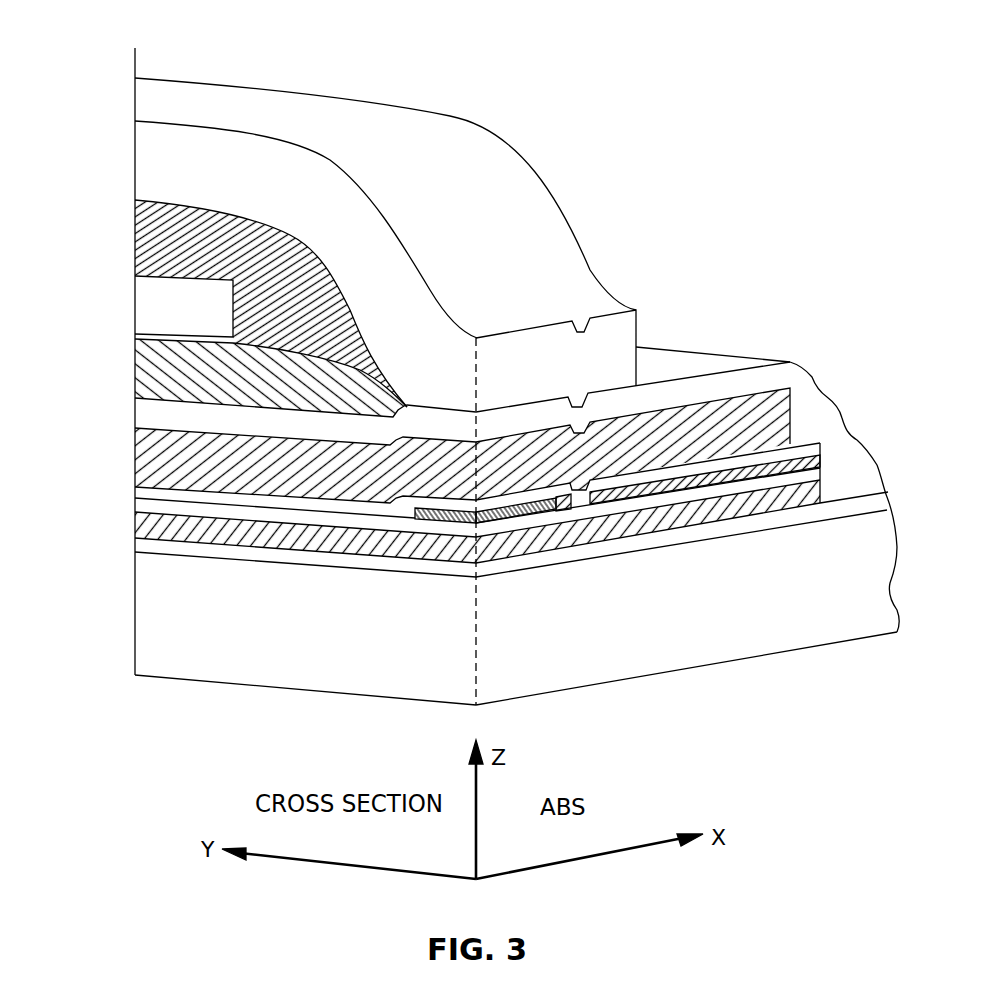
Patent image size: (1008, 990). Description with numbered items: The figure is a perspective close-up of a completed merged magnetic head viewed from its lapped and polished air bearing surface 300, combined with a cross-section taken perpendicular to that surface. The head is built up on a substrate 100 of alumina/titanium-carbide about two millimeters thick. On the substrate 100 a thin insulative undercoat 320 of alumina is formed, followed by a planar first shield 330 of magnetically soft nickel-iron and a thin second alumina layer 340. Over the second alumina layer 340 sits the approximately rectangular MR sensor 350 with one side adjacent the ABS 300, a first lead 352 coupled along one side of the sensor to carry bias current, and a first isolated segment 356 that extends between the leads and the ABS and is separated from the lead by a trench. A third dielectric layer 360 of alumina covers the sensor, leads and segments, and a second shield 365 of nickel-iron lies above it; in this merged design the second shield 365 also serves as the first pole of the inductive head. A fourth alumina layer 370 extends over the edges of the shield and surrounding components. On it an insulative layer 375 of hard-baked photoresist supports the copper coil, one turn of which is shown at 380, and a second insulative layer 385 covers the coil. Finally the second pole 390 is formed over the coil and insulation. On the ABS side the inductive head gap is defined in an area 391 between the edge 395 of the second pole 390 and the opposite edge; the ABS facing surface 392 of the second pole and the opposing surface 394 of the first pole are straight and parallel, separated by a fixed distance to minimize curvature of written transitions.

The substrate 100 is at (206, 661).
The air bearing surface 300 is at (740, 567).
The undercoat 320 is at (135, 543).
The first shield 330 is at (135, 522).
The second alumina layer 340 is at (135, 507).
The MR sensor 350 is at (433, 521).
The first lead 352 is at (557, 504).
The first isolated segment 356 is at (668, 492).
The third dielectric layer 360 is at (135, 493).
The second shield 365 is at (135, 455).
The fourth alumina layer 370 is at (135, 413).
The insulative layer 375 is at (135, 367).
The coil turn 380 is at (135, 305).
The second insulative layer 385 is at (135, 240).
The second pole 390 is at (135, 172).
The inductive head gap area 391 is at (600, 402).
The ABS facing surface of the second pole 392 is at (510, 406).
The opposing surface of the first pole 394 is at (543, 428).
The edge of the second pole 395 is at (638, 322).